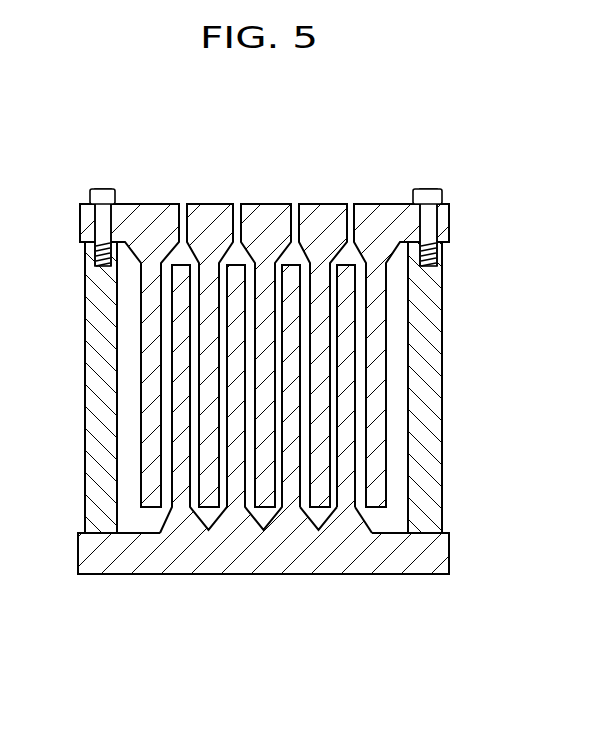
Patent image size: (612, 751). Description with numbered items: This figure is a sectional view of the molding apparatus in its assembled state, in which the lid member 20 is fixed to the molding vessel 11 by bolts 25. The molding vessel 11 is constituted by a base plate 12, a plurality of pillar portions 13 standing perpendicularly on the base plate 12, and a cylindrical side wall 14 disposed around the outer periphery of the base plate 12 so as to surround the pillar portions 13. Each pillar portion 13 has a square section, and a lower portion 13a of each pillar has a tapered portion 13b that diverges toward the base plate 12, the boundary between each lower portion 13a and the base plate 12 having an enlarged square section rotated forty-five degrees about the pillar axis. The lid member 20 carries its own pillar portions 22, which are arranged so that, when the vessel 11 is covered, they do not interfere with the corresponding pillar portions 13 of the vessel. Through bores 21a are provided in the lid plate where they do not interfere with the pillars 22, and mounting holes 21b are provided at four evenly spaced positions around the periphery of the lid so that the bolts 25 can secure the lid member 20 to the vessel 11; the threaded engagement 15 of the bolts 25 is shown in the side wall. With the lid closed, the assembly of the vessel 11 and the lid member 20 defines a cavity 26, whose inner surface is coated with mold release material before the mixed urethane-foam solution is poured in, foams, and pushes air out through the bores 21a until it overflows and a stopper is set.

The molding vessel 11 is at (456, 402).
The base plate 12 is at (278, 553).
The pillar portions 13 is at (345, 466).
The lower portion 13a is at (343, 525).
The tapered portion 13b is at (363, 520).
The cylindrical side wall 14 is at (423, 372).
The threaded bore 15 is at (437, 256).
The lid member 20 is at (267, 324).
The through bores 21a is at (347, 228).
The mounting holes 21b is at (443, 218).
The pillar portions 22 is at (153, 352).
The bolts 25 is at (298, 196).
The cavity 26 is at (397, 317).